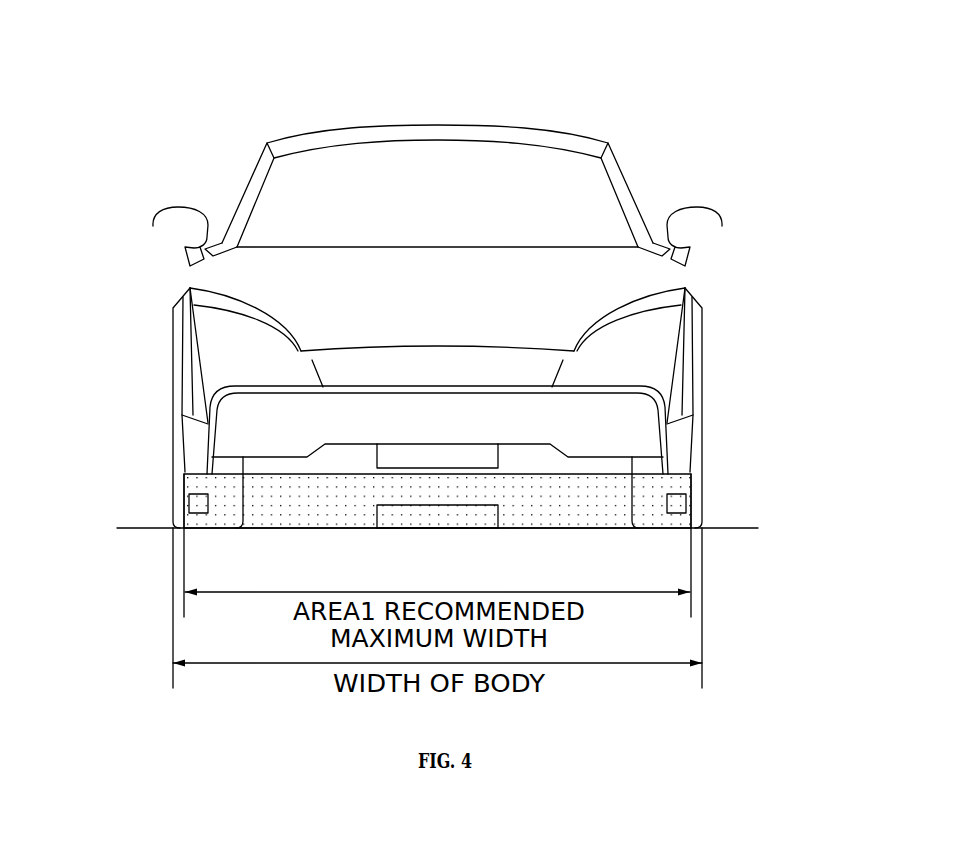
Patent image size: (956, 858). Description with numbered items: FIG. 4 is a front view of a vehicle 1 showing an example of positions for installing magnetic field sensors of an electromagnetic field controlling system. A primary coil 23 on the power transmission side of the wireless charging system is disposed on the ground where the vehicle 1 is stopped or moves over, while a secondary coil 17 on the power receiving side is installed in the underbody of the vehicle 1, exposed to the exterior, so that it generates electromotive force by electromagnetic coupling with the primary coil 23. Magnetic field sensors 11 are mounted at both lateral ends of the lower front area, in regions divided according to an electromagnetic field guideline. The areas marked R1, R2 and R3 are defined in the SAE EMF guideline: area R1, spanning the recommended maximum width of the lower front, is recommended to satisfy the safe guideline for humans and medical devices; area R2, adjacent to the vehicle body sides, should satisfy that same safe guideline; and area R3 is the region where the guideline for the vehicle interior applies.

The vehicle 1 is at (652, 140).
The magnetic field sensor 11 is at (196, 502).
The secondary coil 17 is at (372, 456).
The primary coil 23 is at (377, 517).
The area R1 is at (437, 501).
The area R2 is at (763, 282).
The area R3 is at (437, 179).